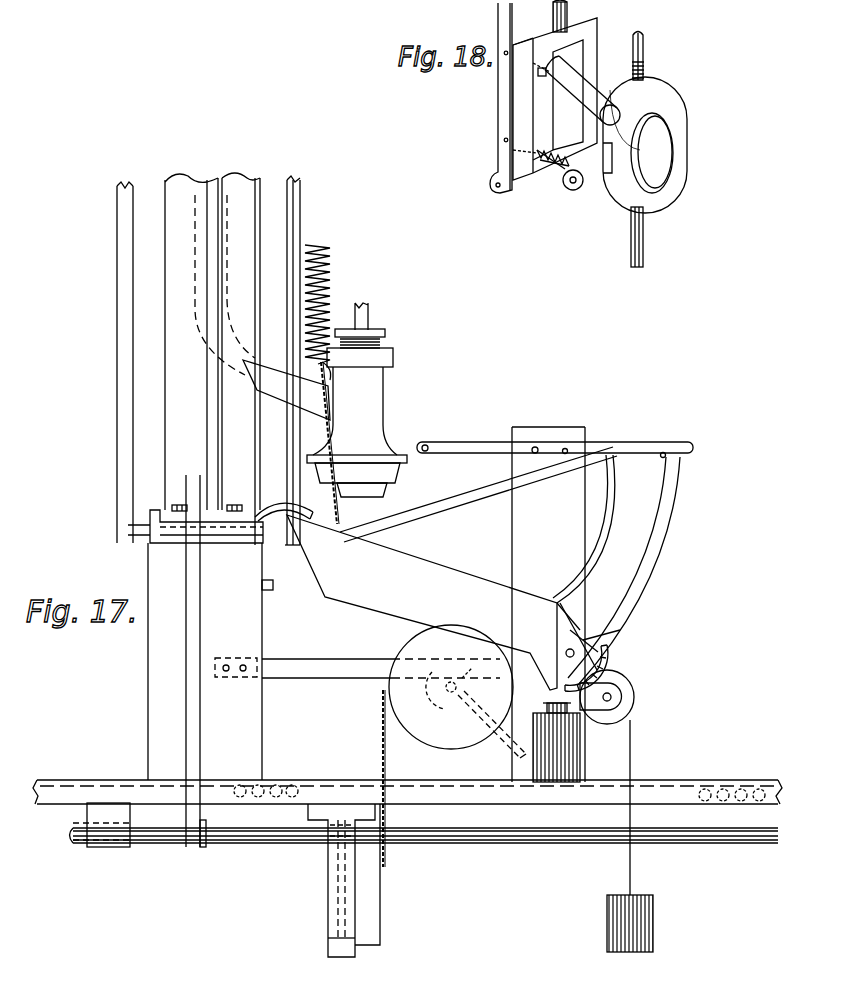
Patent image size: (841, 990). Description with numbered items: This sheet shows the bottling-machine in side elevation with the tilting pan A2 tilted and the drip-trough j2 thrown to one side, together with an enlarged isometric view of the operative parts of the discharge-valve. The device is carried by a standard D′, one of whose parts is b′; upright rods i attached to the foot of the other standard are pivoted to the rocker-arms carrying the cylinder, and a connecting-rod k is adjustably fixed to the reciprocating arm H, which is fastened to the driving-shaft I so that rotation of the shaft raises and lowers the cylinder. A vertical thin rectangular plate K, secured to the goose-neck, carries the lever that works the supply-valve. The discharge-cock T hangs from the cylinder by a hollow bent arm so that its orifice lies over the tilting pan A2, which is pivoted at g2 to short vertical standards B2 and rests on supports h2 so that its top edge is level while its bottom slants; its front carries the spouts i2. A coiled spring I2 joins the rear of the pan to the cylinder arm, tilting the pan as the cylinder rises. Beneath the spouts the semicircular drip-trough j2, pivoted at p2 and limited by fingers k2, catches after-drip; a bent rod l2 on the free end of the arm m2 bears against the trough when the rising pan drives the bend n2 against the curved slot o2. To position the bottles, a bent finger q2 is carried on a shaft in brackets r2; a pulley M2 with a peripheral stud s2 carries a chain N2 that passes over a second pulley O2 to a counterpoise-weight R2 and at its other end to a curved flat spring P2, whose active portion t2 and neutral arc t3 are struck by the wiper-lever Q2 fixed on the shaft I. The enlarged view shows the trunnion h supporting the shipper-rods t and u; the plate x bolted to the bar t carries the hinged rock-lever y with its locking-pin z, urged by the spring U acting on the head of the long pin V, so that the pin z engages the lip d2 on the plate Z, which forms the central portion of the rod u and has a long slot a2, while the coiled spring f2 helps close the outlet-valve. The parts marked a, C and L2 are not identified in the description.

In FIG. 17, the upright rod i is at (300, 208).
In FIG. 17, the coiled spring I2 is at (325, 304).
In FIG. 18, the shipper-rod u is at (644, 46).
In FIG. 17, the shipper-rod u is at (370, 318).
In FIG. 17, the discharge-cock T is at (287, 390).
In FIG. 17, the standard D′ is at (188, 359).
In FIG. 17, the drip-trough j2 is at (259, 497).
In FIG. 17, the support h2 is at (306, 530).
In FIG. 17, the tilting pan A2 is at (422, 602).
In FIG. 17, the vertical thin rectangular plate K is at (478, 494).
In FIG. 17, the vertical arm or standard B2 is at (548, 604).
In FIG. 17, the curved slot o2 is at (538, 445).
In FIG. 17, the arm m2 is at (624, 443).
In FIG. 17, the bend n2 is at (618, 455).
In FIG. 17, the bent rod l2 is at (624, 571).
In FIG. 17, the pivot g2 is at (578, 628).
In FIG. 17, the spout i2 is at (558, 622).
In FIG. 17, the finger k2 is at (584, 627).
In FIG. 17, the pivot p2 is at (604, 647).
In FIG. 17, the second pulley O2 is at (624, 700).
In FIG. 17, the standard part b′ is at (200, 642).
In FIG. 17, the connecting-rod k is at (188, 652).
In FIG. 17, the bracket r2 is at (357, 666).
In FIG. 17, the hub L2 is at (449, 681).
In FIG. 17, the stud s2 is at (394, 690).
In FIG. 17, the pulley M2 is at (451, 687).
In FIG. 17, the chain N2 is at (367, 778).
In FIG. 17, the bent finger q2 is at (495, 745).
In FIG. 17, the rings a is at (240, 785).
In FIG. 17, the table C is at (650, 781).
In FIG. 17, the reciprocating arm H is at (208, 840).
In FIG. 17, the wiper-lever Q2 is at (328, 860).
In FIG. 17, the curved flat spring P2 is at (328, 904).
In FIG. 17, the inactive or neutral portion t3 is at (356, 897).
In FIG. 17, the active portion t2 is at (343, 950).
In FIG. 17, the driving-shaft I is at (424, 848).
In FIG. 17, the counterpoise-weight R2 is at (643, 836).
In FIG. 18, the shipper-rod t is at (553, 12).
In FIG. 18, the coiled spring f2 is at (646, 70).
In FIG. 18, the rock-lever y is at (500, 88).
In FIG. 18, the plate x is at (555, 99).
In FIG. 18, the locking-pin z is at (542, 78).
In FIG. 18, the trunnion h is at (582, 90).
In FIG. 18, the plate Z is at (645, 145).
In FIG. 18, the lip or spur d2 is at (613, 125).
In FIG. 18, the slot or opening a2 is at (665, 153).
In FIG. 18, the spring U is at (562, 176).
In FIG. 18, the long pin V is at (578, 189).